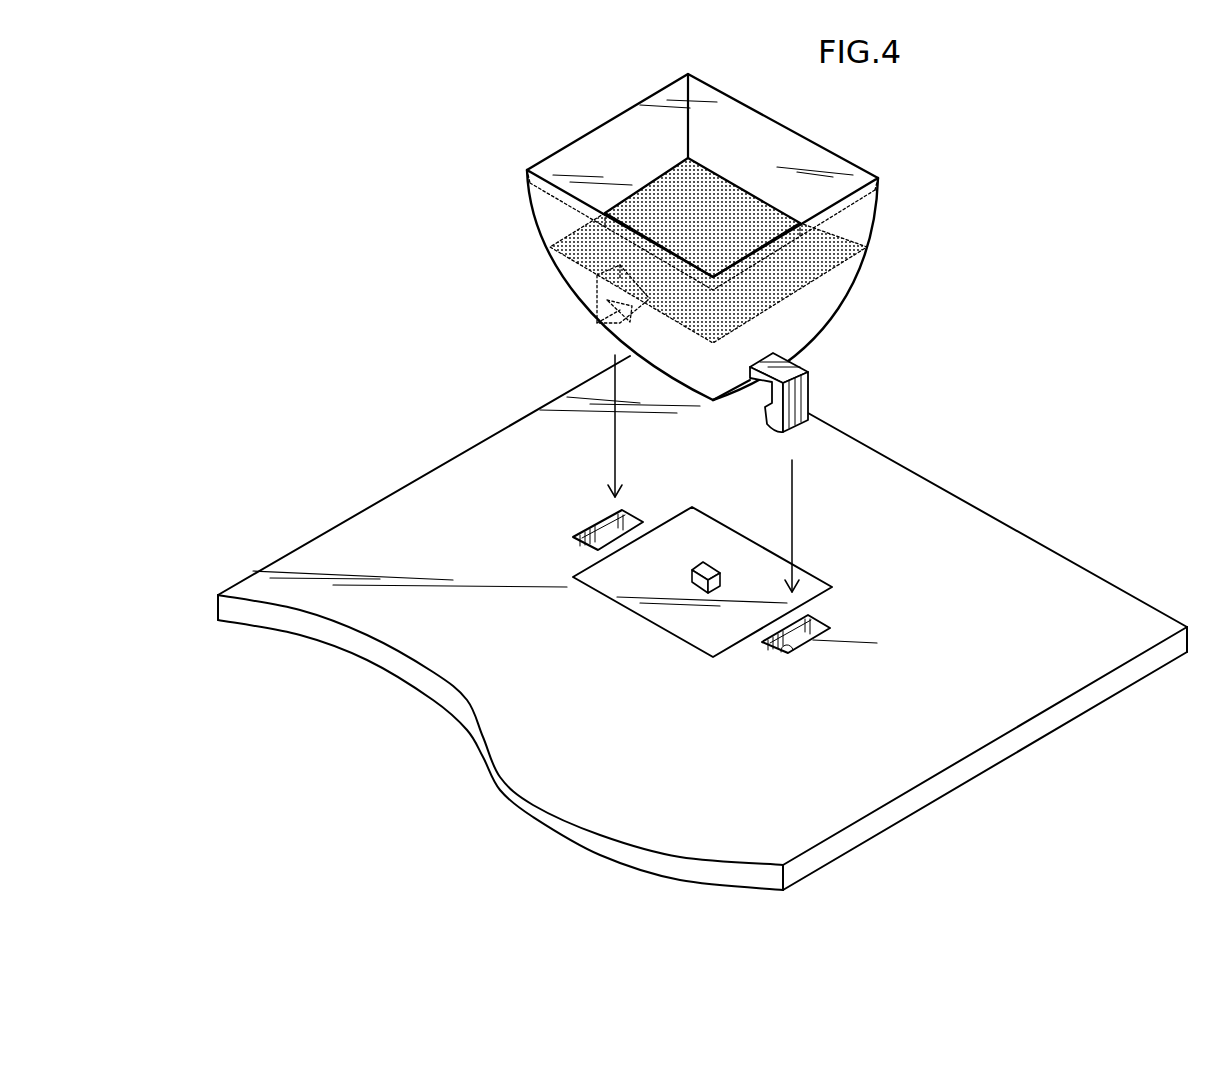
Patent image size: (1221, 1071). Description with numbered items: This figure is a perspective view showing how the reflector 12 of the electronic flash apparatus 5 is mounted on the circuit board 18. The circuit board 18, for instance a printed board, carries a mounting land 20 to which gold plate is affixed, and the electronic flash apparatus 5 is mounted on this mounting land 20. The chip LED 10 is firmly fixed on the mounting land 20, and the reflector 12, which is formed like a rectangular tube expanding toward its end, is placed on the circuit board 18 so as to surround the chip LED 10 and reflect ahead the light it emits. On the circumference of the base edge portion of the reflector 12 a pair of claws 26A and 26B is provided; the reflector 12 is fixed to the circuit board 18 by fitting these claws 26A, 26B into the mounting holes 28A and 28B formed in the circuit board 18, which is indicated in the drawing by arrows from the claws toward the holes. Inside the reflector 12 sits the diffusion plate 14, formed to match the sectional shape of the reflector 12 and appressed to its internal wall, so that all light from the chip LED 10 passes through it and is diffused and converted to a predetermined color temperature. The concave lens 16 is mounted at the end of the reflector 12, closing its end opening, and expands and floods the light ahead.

The electronic flash apparatus 5 is at (308, 230).
The chip LED 10 is at (690, 568).
The reflector 12 is at (856, 230).
The diffusion plate 14 is at (568, 224).
The concave lens 16 is at (637, 143).
The circuit board 18 is at (318, 578).
The mounting land 20 is at (658, 620).
The claw 26A is at (808, 402).
The claw 26B is at (598, 306).
The mounting hole 28A is at (788, 653).
The mounting hole 28B is at (607, 520).